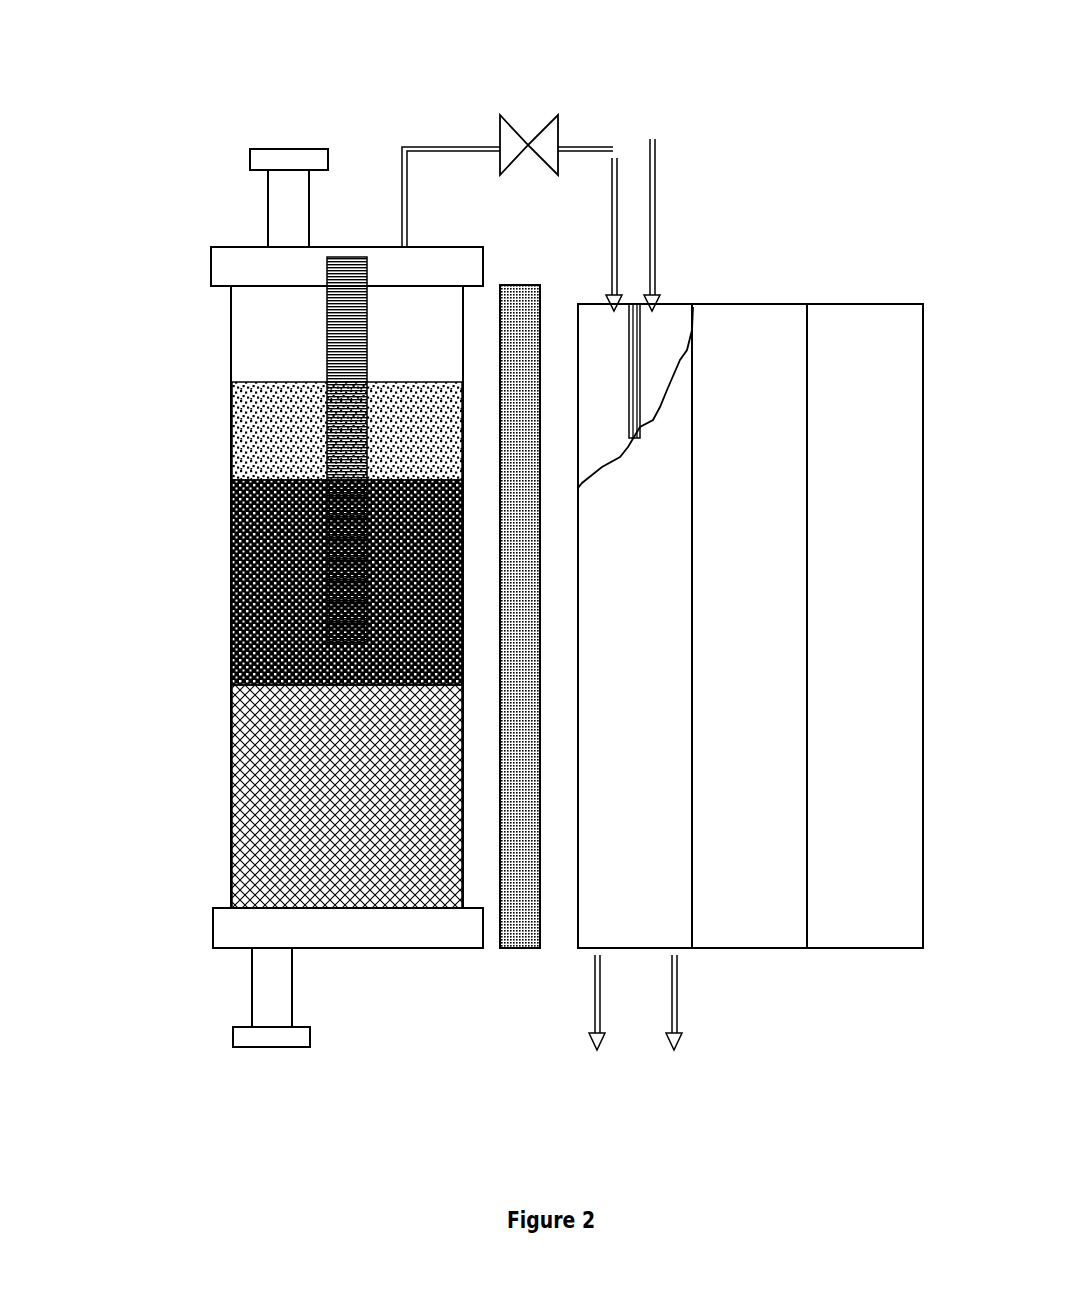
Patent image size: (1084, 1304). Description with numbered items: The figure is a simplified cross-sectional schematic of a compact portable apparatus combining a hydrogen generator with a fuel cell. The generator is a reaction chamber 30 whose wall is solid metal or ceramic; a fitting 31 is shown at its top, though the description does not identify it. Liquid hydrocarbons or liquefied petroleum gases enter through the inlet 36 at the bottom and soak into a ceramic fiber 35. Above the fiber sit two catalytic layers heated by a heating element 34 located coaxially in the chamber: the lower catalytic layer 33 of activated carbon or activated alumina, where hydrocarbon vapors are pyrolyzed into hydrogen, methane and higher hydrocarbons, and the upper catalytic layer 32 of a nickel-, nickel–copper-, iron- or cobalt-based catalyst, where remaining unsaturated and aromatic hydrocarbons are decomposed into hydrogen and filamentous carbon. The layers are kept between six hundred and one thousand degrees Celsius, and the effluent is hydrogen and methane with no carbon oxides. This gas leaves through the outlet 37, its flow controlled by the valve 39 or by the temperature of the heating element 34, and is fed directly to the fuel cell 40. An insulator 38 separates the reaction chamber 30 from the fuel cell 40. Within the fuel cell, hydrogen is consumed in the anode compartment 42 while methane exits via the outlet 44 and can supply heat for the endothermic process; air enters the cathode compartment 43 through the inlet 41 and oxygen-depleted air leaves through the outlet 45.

The reaction chamber 30 is at (230, 305).
The top inlet fitting 31 is at (268, 208).
The upper catalytic layer 32 is at (267, 417).
The lower catalytic layer 33 is at (228, 540).
The heating element 34 is at (353, 605).
The ceramic fiber 35 is at (300, 802).
The inlet 36 is at (252, 968).
The outlet 37 is at (462, 158).
The insulator 38 is at (522, 937).
The valve 39 is at (545, 127).
The fuel cell 40 is at (770, 303).
The inlet 41 is at (655, 205).
The anode compartment 42 is at (595, 352).
The cathode compartment 43 is at (653, 350).
The outlet 44 is at (600, 995).
The outlet 45 is at (677, 995).